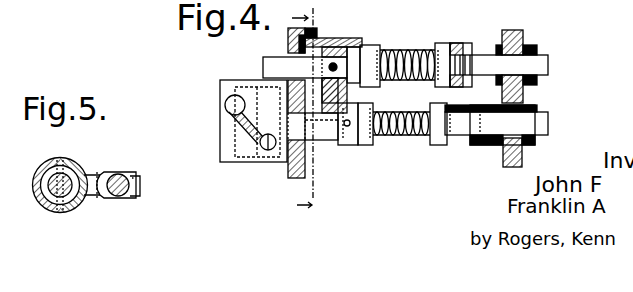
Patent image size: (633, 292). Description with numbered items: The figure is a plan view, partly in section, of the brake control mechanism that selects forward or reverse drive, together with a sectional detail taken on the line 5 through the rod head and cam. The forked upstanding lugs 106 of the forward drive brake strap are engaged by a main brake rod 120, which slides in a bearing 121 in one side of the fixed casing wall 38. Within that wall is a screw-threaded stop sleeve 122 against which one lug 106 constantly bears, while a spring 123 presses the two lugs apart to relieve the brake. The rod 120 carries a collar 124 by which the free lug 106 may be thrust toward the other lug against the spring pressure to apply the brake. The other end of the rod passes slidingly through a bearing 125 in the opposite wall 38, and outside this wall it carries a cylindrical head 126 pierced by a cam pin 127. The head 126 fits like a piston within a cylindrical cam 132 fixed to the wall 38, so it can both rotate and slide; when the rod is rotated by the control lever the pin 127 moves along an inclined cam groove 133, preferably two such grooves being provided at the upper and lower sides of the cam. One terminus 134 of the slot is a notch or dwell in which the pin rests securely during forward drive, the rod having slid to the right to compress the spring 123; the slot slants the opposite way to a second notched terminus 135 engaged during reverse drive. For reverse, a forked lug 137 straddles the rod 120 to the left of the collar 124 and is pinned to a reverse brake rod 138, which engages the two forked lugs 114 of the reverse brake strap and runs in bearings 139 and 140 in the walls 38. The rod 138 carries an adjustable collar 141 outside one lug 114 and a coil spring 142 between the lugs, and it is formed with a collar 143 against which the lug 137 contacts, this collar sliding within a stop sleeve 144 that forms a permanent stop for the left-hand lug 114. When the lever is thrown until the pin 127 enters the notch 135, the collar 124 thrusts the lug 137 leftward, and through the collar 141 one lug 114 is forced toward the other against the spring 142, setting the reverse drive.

In FIG. 4, the section line 5— 5 is at (307, 112).
In FIG. 4, the fixed casing wall 38 is at (578, 142).
In FIG. 4, the forked upstanding lugs 106 is at (365, 147).
In FIG. 4, the upwardly extending lugs 114 is at (372, 45).
In FIG. 5, the main brake rod 120 is at (130, 172).
In FIG. 4, the main brake rod 120 is at (522, 128).
In FIG. 4, the bearing 121 is at (525, 108).
In FIG. 4, the stop sleeve 122 is at (455, 140).
In FIG. 4, the spring 123 is at (388, 138).
In FIG. 5, the collar 124 is at (138, 196).
In FIG. 4, the collar 124 is at (348, 147).
In FIG. 4, the bearing 125 is at (310, 148).
In FIG. 4, the cylindrical head 126 is at (243, 93).
In FIG. 4, the cam pin 127 is at (258, 150).
In FIG. 4, the cylindrical cam 132 is at (232, 163).
In FIG. 4, the inclined cam groove 133 is at (250, 118).
In FIG. 4, the terminus 134 is at (270, 152).
In FIG. 4, the second notched terminus 135 is at (228, 110).
In FIG. 5, the forked lug 137 is at (89, 196).
In FIG. 4, the forked lug 137 is at (340, 98).
In FIG. 5, the reverse brake rod 138 is at (54, 196).
In FIG. 4, the reverse brake rod 138 is at (520, 65).
In FIG. 4, the bearing 139 is at (515, 46).
In FIG. 4, the bearing 140 is at (305, 67).
In FIG. 4, the adjustable collar 141 is at (466, 44).
In FIG. 4, the coil spring 142 is at (405, 52).
In FIG. 4, the collar 143 is at (355, 45).
In FIG. 5, the stop sleeve 144 is at (50, 168).
In FIG. 4, the stop sleeve 144 is at (340, 30).